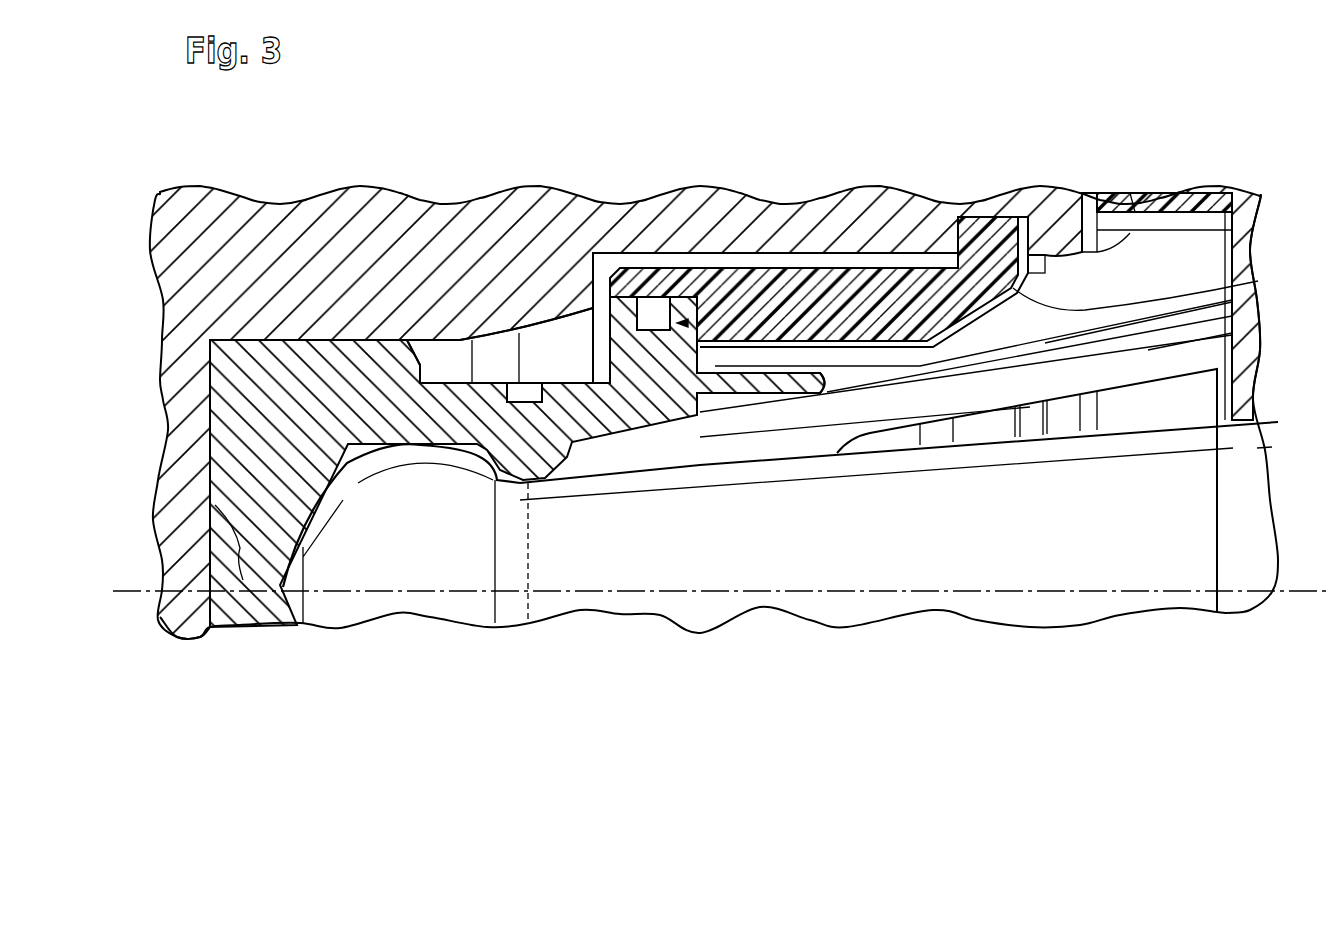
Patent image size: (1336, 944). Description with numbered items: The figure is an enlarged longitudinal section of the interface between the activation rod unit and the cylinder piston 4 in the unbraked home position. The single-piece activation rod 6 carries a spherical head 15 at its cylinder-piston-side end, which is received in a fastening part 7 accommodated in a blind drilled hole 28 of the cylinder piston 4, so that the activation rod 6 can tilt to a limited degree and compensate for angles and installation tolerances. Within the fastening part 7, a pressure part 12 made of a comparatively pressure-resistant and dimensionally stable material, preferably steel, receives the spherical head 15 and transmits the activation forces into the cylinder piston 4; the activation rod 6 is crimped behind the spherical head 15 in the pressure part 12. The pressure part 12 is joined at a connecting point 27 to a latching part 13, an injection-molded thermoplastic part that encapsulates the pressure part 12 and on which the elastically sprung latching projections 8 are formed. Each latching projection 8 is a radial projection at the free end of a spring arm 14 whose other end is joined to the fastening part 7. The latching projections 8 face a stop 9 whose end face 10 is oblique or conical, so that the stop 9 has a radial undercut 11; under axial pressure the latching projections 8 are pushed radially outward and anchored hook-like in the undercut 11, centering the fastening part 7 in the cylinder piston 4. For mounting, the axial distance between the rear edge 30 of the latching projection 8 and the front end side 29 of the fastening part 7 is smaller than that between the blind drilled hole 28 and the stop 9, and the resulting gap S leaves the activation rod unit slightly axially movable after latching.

The cylinder piston 4 is at (625, 232).
The activation rod 6 is at (813, 545).
The fastening part 7 is at (607, 353).
The latching projection 8 is at (990, 235).
The stop 9 is at (1098, 188).
The end face 10 is at (1258, 281).
The undercut 11 is at (1077, 223).
The pressure part 12 is at (652, 380).
The latching part 13 is at (663, 283).
The spring arm 14 is at (795, 310).
The spherical head 15 is at (417, 527).
The connecting point 27 is at (680, 323).
The blind drilled hole 28 is at (243, 580).
The front end side 29 is at (210, 423).
The rear edge 30 is at (1033, 257).
The gap S is at (1136, 197).